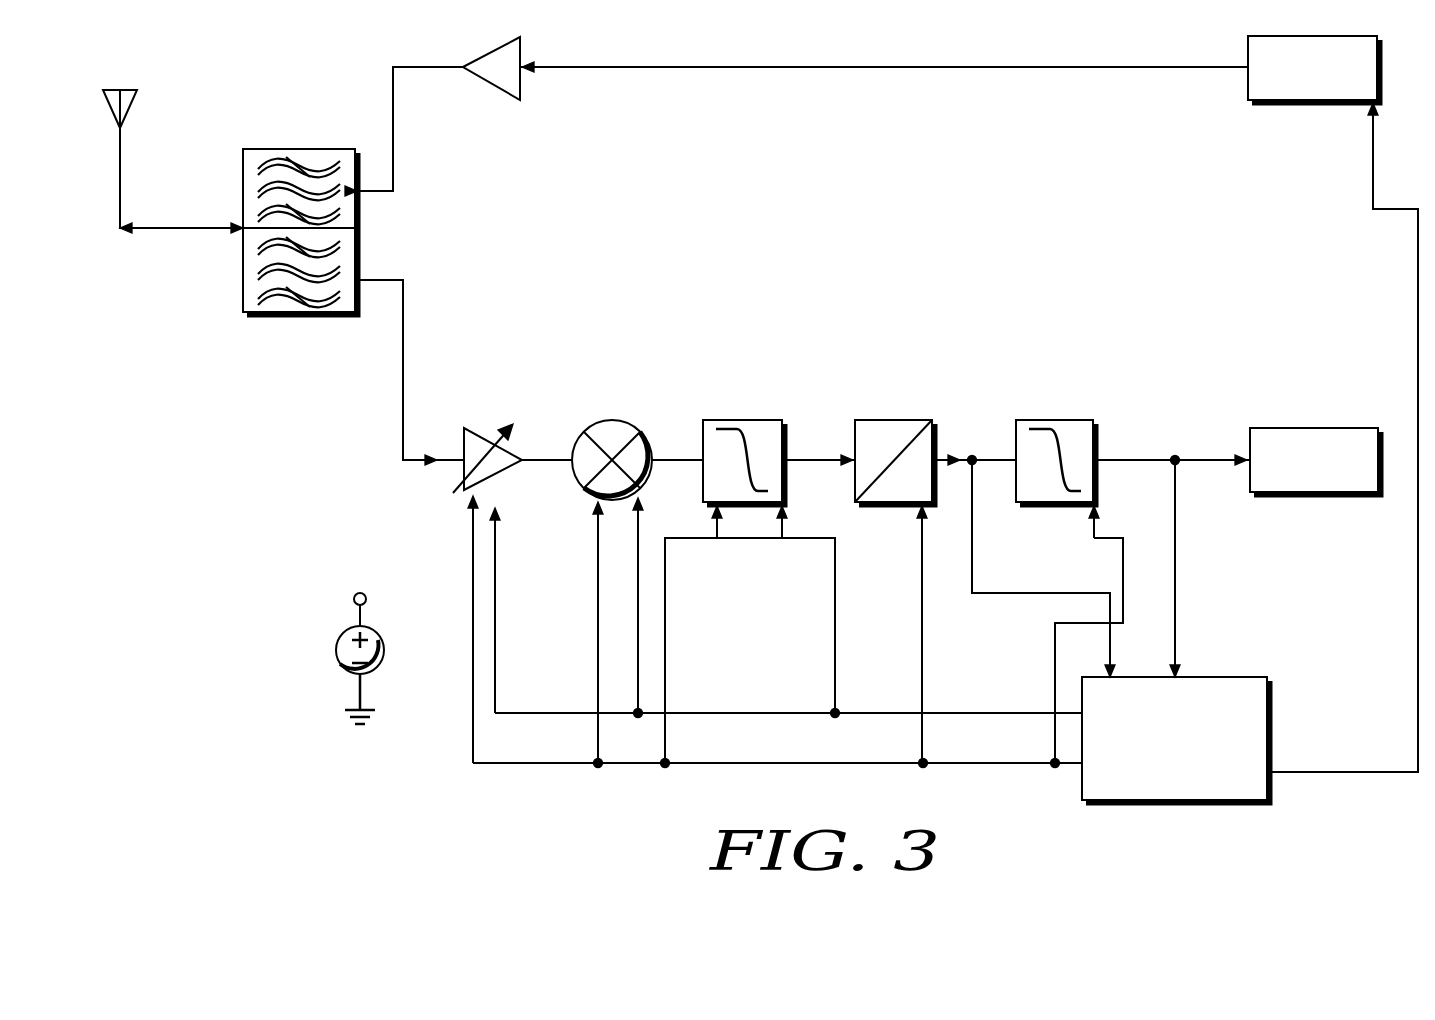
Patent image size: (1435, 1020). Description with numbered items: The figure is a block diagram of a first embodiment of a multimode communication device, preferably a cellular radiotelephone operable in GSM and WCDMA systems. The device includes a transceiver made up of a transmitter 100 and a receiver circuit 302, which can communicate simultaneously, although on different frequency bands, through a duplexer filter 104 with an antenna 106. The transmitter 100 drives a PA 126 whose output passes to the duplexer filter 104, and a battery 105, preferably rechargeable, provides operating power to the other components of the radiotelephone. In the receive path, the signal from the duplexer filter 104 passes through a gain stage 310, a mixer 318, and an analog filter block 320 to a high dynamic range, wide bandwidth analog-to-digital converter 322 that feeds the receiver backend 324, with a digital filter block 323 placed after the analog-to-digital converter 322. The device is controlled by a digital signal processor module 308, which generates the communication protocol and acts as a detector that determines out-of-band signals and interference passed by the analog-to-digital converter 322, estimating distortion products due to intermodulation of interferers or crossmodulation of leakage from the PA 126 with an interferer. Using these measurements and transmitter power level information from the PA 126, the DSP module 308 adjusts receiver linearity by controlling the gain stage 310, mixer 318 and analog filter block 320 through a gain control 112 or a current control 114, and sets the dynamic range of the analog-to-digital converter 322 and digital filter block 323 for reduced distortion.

The transmitter 100 is at (1272, 36).
The duplexer filter 104 is at (263, 149).
The battery 105 is at (355, 593).
The antenna 106 is at (126, 90).
The PA 126 is at (500, 46).
The receiver circuit 302 is at (678, 418).
The digital signal processor module 308 is at (1261, 677).
The gain stage 310 is at (467, 428).
The mixer 318 is at (616, 420).
The analog filter block 320 is at (756, 420).
The analog-to-digital converter 322 is at (891, 420).
The digital filter block 323 is at (1051, 420).
The receiver backend 324 is at (1296, 428).
The gain control 112 is at (850, 713).
The current control 114 is at (860, 765).